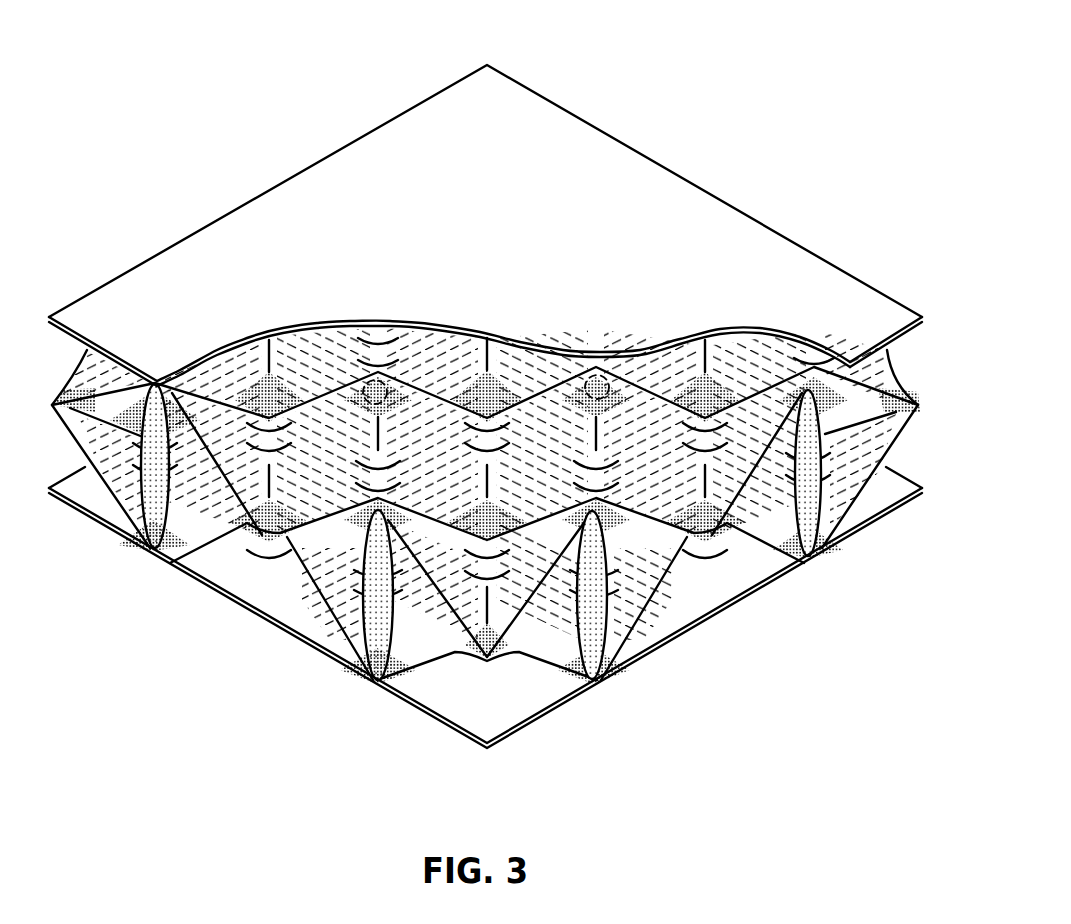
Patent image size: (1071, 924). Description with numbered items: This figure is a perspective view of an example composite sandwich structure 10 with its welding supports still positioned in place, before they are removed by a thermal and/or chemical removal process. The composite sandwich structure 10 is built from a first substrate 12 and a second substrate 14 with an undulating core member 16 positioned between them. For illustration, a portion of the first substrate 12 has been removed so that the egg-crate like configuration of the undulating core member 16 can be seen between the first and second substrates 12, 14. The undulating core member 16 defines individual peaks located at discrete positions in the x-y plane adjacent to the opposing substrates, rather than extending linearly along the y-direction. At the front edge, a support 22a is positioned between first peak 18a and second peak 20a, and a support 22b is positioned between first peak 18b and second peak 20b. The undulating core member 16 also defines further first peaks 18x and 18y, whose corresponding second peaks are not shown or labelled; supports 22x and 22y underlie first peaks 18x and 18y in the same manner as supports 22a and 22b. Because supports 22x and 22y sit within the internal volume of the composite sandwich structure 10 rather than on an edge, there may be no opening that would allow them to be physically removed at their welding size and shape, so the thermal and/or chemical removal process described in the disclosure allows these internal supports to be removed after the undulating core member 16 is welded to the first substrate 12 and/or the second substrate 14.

The composite sandwich structure 10 is at (846, 50).
The first substrate 12 is at (622, 151).
The second substrate 14 is at (720, 607).
The undulating core member 16 is at (219, 430).
The first peak 18a is at (180, 390).
The first peak 18b is at (378, 505).
The first peak 18x is at (397, 383).
The first peak 18y is at (565, 390).
The second peak 20a is at (163, 552).
The second peak 20b is at (375, 683).
The support 22a is at (150, 530).
The support 22b is at (378, 602).
The support 22x is at (372, 383).
The support 22y is at (600, 383).